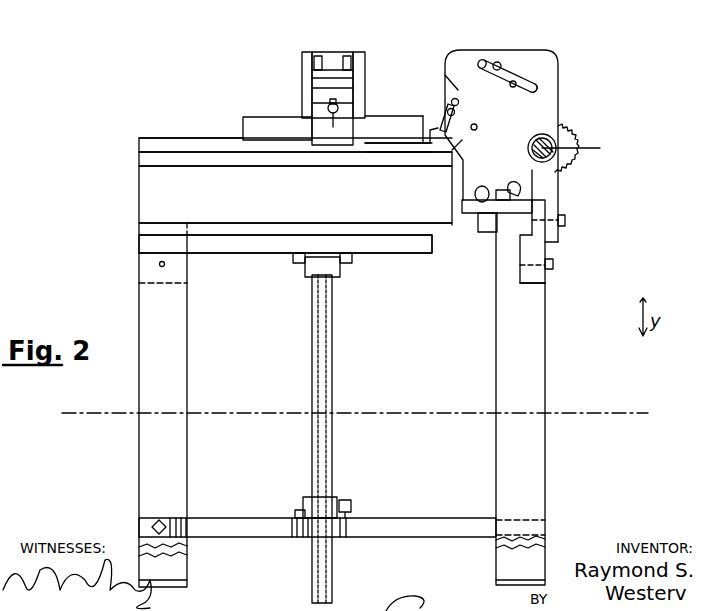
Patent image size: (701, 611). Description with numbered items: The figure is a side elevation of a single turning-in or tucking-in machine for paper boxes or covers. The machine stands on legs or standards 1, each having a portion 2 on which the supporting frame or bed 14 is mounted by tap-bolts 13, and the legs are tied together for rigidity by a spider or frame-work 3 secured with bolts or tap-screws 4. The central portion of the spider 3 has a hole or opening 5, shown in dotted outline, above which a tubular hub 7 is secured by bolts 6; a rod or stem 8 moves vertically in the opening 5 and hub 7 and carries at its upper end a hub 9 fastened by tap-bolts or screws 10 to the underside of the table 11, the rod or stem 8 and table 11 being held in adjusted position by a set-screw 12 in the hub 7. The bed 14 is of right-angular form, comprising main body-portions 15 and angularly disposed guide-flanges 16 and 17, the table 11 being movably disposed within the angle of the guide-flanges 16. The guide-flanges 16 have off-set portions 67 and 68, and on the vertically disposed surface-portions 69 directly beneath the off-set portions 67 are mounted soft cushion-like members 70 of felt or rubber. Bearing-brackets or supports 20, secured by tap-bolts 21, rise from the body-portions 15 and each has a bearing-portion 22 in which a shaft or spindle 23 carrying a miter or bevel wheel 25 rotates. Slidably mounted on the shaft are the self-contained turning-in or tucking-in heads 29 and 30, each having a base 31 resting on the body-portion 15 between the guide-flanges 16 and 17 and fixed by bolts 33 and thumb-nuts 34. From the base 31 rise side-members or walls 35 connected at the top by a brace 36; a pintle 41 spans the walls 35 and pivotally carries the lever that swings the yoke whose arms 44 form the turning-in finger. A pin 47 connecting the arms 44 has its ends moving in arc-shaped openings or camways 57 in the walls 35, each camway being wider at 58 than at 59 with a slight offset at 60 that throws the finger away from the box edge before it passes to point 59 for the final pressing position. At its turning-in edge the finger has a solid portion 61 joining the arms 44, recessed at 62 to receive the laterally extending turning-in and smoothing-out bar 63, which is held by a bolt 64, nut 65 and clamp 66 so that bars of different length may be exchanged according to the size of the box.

The legs or standards 1 is at (187, 350).
The supporting portion of leg 2 is at (535, 285).
The spider or frame-work 3 is at (436, 550).
The bolts or tap-screws 4 is at (155, 523).
The hole or opening 5 is at (335, 525).
The bolts 6 is at (300, 512).
The tubular hub 7 is at (325, 500).
The rod or stem 8 is at (330, 422).
The hub 9 is at (312, 268).
The tap-bolts or screws 10 is at (300, 262).
The table 11 is at (388, 248).
The set-screw 12 is at (347, 500).
The tap-bolts 13 is at (160, 264).
The supporting frame or bed 14 is at (277, 195).
The main body-portions 15 is at (492, 232).
The guide-flanges 16 is at (150, 210).
The guide-flange 17 is at (550, 205).
The bearing-brackets or supports 20 is at (548, 188).
The tap-bolts 21 is at (565, 220).
The bearing-portion 22 is at (541, 134).
The shaft or spindle 23 is at (581, 150).
The miter or bevel wheel 25 is at (574, 134).
The turning-in or tucking-in head 29 is at (520, 141).
The turning-in or tucking-in head 30 is at (290, 78).
The base 31 is at (470, 213).
The bolts 33 is at (509, 186).
The thumb-nuts 34 is at (484, 187).
The side-members or walls 35 is at (305, 52).
The brace 36 is at (333, 60).
The pintle 41 is at (477, 137).
The arms of yoke 44 is at (318, 56).
The pin 47 is at (498, 62).
The arc-shaped openings or camways 57 is at (515, 74).
The wider portion of camway 58 is at (537, 88).
The narrower end of camway 59 is at (483, 62).
The offset 60 is at (513, 87).
The solid portion 61 is at (342, 86).
The recess 62 is at (423, 130).
The turning-in and smoothing-out bar 63 is at (263, 120).
The bolt 64 is at (328, 108).
The nut 65 is at (330, 101).
The clamp 66 is at (452, 112).
The off-set portion 67 is at (172, 138).
The off-set portion 68 is at (210, 166).
The vertically disposed surface-portions 69 is at (335, 166).
The soft cushion-like members 70 is at (139, 150).